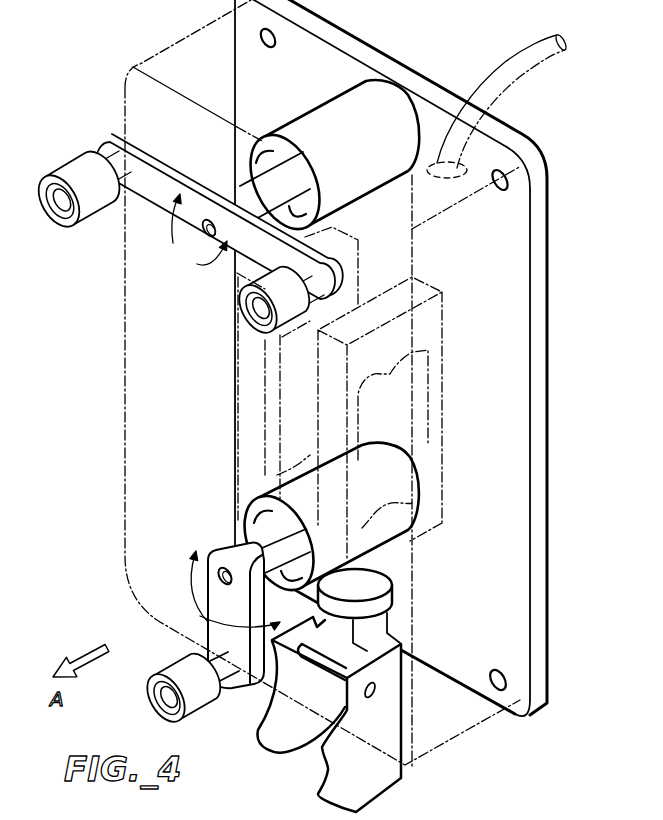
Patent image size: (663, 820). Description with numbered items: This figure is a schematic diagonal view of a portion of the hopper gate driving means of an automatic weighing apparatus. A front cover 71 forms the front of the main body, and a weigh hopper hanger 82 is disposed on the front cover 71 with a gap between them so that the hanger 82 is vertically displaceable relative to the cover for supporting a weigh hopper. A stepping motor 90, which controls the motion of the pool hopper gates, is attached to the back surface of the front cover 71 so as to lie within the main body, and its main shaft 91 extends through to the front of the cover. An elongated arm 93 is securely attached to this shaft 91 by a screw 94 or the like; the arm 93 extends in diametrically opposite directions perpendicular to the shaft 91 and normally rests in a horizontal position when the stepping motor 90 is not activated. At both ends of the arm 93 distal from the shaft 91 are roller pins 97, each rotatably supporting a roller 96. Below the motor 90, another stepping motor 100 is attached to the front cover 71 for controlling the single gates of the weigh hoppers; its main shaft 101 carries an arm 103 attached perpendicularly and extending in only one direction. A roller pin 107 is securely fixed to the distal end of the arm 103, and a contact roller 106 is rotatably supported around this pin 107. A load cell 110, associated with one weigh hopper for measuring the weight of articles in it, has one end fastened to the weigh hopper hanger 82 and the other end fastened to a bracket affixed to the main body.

The front cover 71 is at (137, 518).
The weigh hopper hanger 82 is at (388, 753).
The stepping motor 90 is at (378, 93).
The main shaft 91 is at (233, 194).
The arm 93 is at (150, 200).
The screw 94 is at (193, 246).
The roller 96 is at (55, 178).
The roller pin 97 is at (97, 168).
The stepping motor 100 is at (372, 540).
The main shaft 101 is at (253, 547).
The arm 103 is at (217, 619).
The contact roller 106 is at (150, 678).
The roller pin 107 is at (208, 690).
The load cell 110 is at (248, 376).